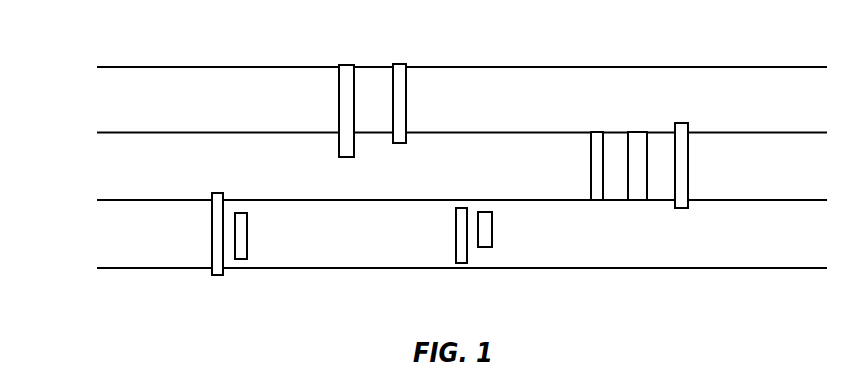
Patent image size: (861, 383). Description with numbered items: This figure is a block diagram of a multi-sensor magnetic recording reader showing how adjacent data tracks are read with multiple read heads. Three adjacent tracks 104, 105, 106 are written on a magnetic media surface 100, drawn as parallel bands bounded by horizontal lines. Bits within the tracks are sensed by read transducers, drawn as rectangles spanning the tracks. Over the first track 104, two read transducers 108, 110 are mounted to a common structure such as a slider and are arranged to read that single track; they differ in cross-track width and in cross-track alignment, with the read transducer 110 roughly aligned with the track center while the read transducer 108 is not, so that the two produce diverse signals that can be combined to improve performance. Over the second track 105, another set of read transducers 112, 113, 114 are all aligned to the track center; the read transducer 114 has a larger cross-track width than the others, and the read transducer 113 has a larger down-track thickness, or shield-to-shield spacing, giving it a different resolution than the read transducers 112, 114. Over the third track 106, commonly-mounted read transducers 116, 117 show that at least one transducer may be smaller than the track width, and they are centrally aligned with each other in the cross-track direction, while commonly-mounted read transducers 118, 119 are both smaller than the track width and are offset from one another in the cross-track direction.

The magnetic media surface 100 is at (627, 321).
The track 104 is at (88, 67).
The track 105 is at (88, 133).
The track 106 is at (88, 201).
The read transducer 108 is at (347, 63).
The read transducer 110 is at (400, 63).
The read transducer 112 is at (595, 131).
The read transducer 113 is at (638, 130).
The read transducer 114 is at (682, 122).
The read transducer 116 is at (218, 192).
The read transducer 117 is at (240, 212).
The read transducer 118 is at (462, 207).
The read transducer 119 is at (488, 211).